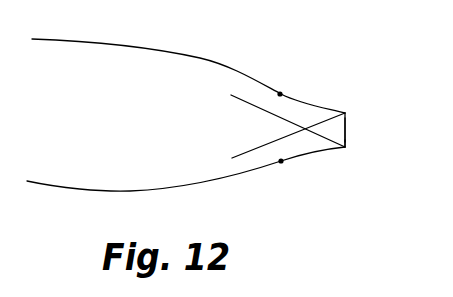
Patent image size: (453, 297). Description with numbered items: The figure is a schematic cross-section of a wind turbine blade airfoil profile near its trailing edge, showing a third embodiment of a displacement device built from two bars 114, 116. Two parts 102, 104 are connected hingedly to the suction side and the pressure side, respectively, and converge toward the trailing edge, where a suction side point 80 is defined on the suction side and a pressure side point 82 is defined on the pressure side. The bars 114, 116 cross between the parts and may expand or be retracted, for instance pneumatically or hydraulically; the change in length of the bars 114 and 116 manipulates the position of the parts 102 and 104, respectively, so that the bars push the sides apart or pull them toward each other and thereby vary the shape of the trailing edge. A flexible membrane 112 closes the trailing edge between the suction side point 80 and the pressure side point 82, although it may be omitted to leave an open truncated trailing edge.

The suction side point 80 is at (347, 113).
The pressure side point 82 is at (346, 147).
The part 102 is at (308, 92).
The part 104 is at (295, 161).
The flexible membrane 112 is at (348, 128).
The bar 114 is at (325, 119).
The bar 116 is at (322, 139).